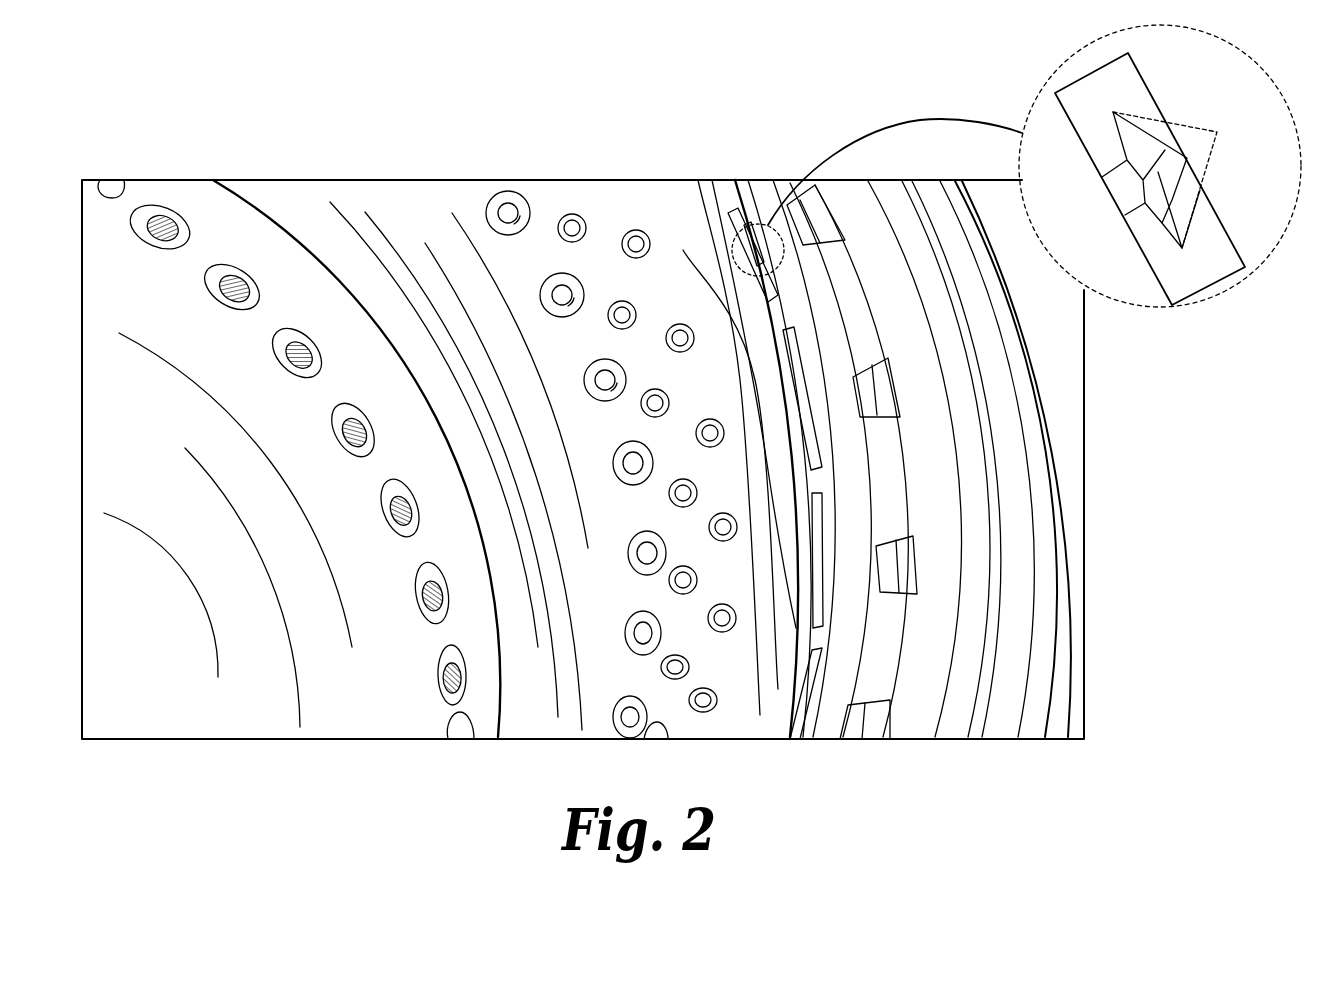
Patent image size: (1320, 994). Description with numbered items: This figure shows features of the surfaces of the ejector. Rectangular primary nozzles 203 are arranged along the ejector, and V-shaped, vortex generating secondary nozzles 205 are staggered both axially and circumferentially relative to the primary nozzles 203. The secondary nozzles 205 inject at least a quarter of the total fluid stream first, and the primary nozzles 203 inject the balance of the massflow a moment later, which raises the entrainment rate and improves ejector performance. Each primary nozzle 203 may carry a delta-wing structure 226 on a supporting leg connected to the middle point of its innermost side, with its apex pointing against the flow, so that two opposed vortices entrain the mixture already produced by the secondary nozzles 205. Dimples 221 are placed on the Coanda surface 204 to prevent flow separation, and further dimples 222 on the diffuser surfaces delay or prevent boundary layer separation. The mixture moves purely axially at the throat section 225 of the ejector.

The primary nozzle 203 is at (760, 226).
The Coanda surface 204 is at (700, 242).
The secondary nozzle 205 is at (877, 400).
The dimple 221 is at (627, 233).
The dimple 222 is at (296, 335).
The throat section 225 is at (310, 247).
The delta-wing structure 226 is at (1180, 166).